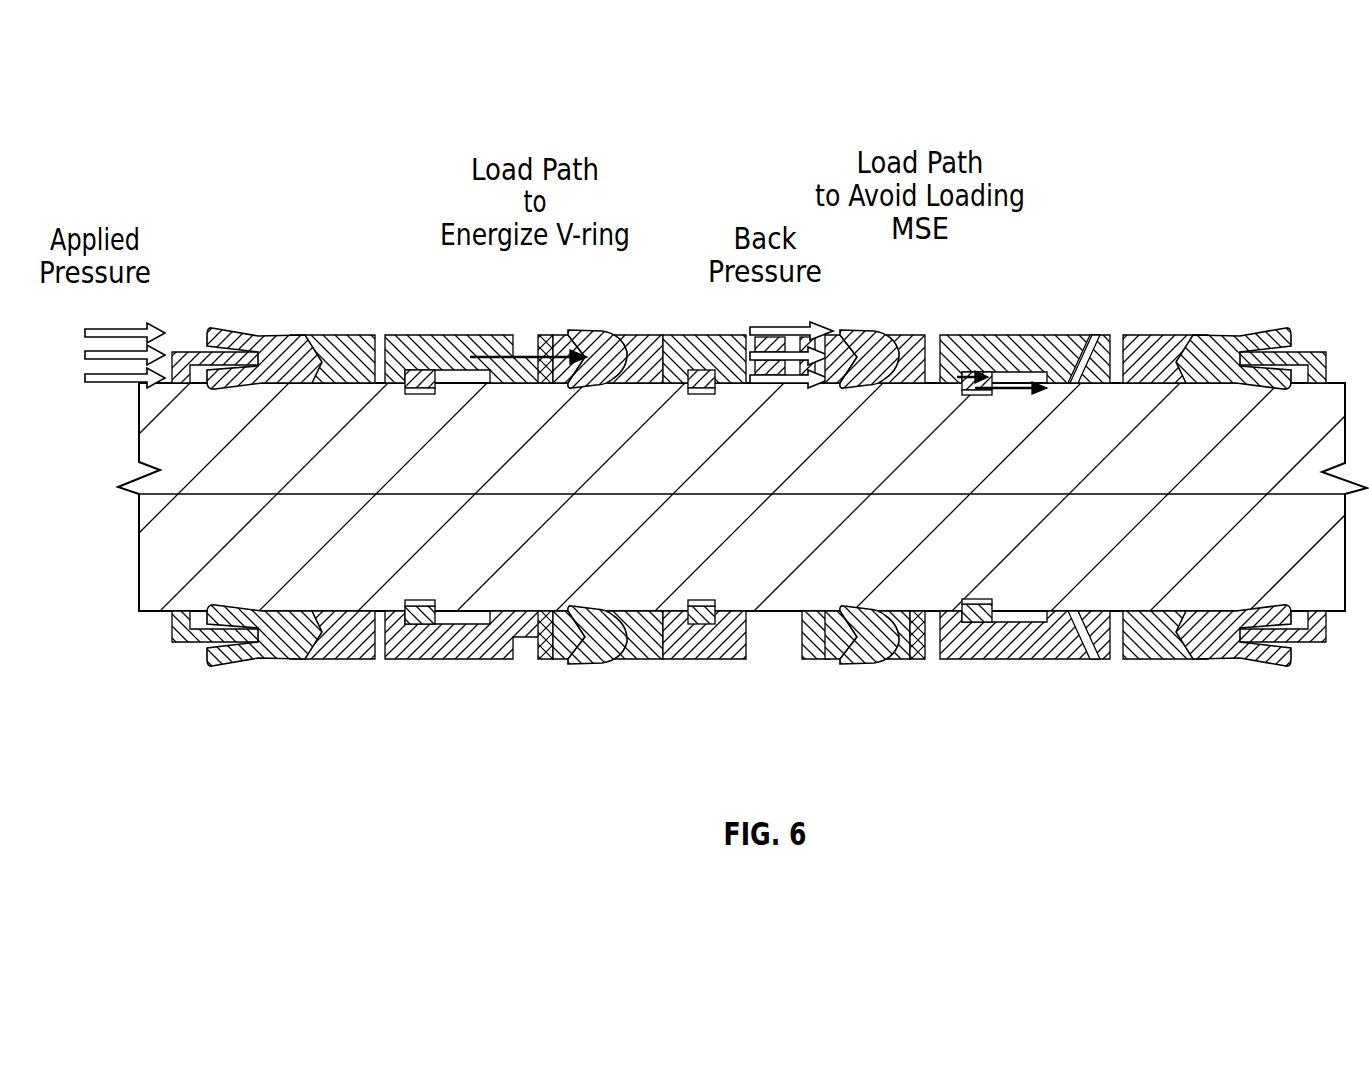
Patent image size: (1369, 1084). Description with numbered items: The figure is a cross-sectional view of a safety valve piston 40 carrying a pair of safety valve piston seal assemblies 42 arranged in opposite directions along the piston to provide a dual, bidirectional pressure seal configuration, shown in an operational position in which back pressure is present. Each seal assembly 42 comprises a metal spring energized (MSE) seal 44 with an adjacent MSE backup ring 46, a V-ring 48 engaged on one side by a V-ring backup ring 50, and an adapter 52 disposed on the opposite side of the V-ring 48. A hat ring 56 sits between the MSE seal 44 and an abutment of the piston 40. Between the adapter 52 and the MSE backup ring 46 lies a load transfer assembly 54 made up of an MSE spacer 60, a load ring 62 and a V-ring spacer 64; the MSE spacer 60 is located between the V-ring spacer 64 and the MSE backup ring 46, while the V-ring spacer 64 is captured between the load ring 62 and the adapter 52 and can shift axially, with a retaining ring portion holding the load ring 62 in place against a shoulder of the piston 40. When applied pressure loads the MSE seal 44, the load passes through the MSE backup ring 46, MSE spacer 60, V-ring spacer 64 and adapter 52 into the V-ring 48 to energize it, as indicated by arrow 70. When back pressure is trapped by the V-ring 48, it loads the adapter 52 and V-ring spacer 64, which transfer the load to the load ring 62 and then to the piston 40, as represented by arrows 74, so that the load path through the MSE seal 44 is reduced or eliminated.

The safety valve piston 40 is at (112, 487).
The safety valve piston seal assembly 42 is at (112, 627).
The metal spring energized (MSE) seal 44 is at (1240, 333).
The MSE backup ring 46 is at (333, 660).
The V-ring 48 is at (588, 662).
The V-ring backup ring 50 is at (633, 335).
The adapter 52 is at (540, 662).
The load transfer assembly 54 is at (349, 257).
The hat ring 56 is at (1314, 345).
The MSE spacer 60 is at (528, 367).
The load ring 62 is at (407, 388).
The V-ring spacer 64 is at (410, 335).
The arrow 70 is at (504, 345).
The arrows 74 is at (999, 364).